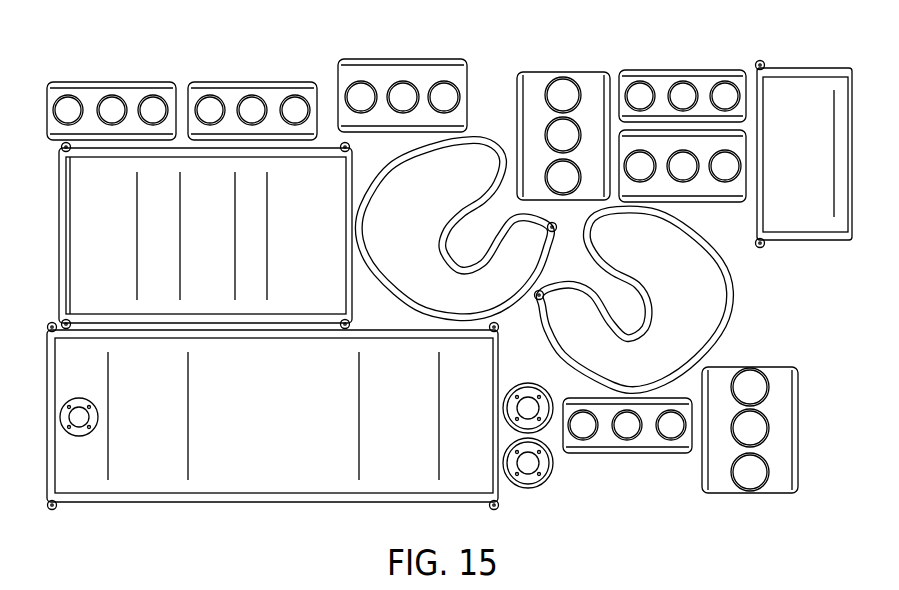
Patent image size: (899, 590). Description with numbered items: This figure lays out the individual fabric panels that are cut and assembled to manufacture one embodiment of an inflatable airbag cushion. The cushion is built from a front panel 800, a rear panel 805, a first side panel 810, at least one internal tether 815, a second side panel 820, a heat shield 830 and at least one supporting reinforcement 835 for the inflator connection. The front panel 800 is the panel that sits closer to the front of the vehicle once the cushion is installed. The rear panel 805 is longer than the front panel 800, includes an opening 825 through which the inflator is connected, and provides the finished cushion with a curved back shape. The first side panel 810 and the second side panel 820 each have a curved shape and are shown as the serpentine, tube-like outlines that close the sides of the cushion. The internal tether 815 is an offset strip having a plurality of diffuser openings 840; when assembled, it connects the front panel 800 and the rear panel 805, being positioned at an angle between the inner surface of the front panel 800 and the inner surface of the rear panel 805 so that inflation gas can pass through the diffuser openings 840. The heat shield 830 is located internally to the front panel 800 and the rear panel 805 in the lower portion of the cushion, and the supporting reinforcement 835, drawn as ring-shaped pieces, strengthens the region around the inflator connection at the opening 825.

The front panel 800 is at (80, 212).
The rear panel 805 is at (273, 433).
The first side panel 810 is at (715, 302).
The internal tether 815 is at (111, 81).
The second side panel 820 is at (485, 158).
The opening 825 is at (80, 427).
The heat shield 830 is at (797, 88).
The supporting reinforcement 835 is at (532, 483).
The diffuser openings 840 is at (112, 108).